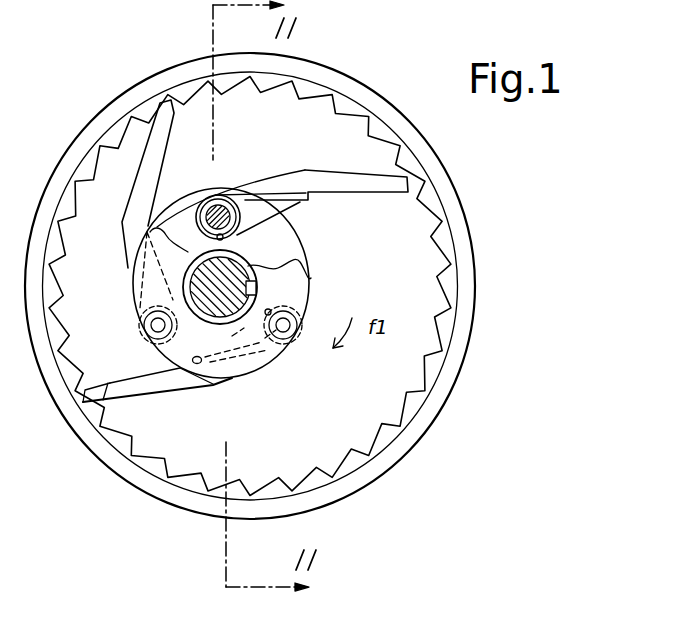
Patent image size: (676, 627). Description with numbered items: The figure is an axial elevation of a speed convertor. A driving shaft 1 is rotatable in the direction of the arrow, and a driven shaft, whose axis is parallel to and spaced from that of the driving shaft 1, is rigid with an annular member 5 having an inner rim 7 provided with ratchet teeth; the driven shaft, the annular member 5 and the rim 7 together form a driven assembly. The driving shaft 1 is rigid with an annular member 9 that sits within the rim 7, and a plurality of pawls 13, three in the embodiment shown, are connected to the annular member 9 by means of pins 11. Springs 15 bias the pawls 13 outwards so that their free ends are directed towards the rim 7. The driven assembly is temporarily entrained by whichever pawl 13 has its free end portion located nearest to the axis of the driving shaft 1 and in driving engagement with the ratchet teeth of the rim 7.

The driving shaft 1 is at (248, 372).
The annular member 5 is at (381, 104).
The inner rim 7 is at (430, 230).
The annular member 9 is at (230, 384).
The pins 11 is at (212, 203).
The pawls 13 is at (347, 168).
The springs 15 is at (283, 178).